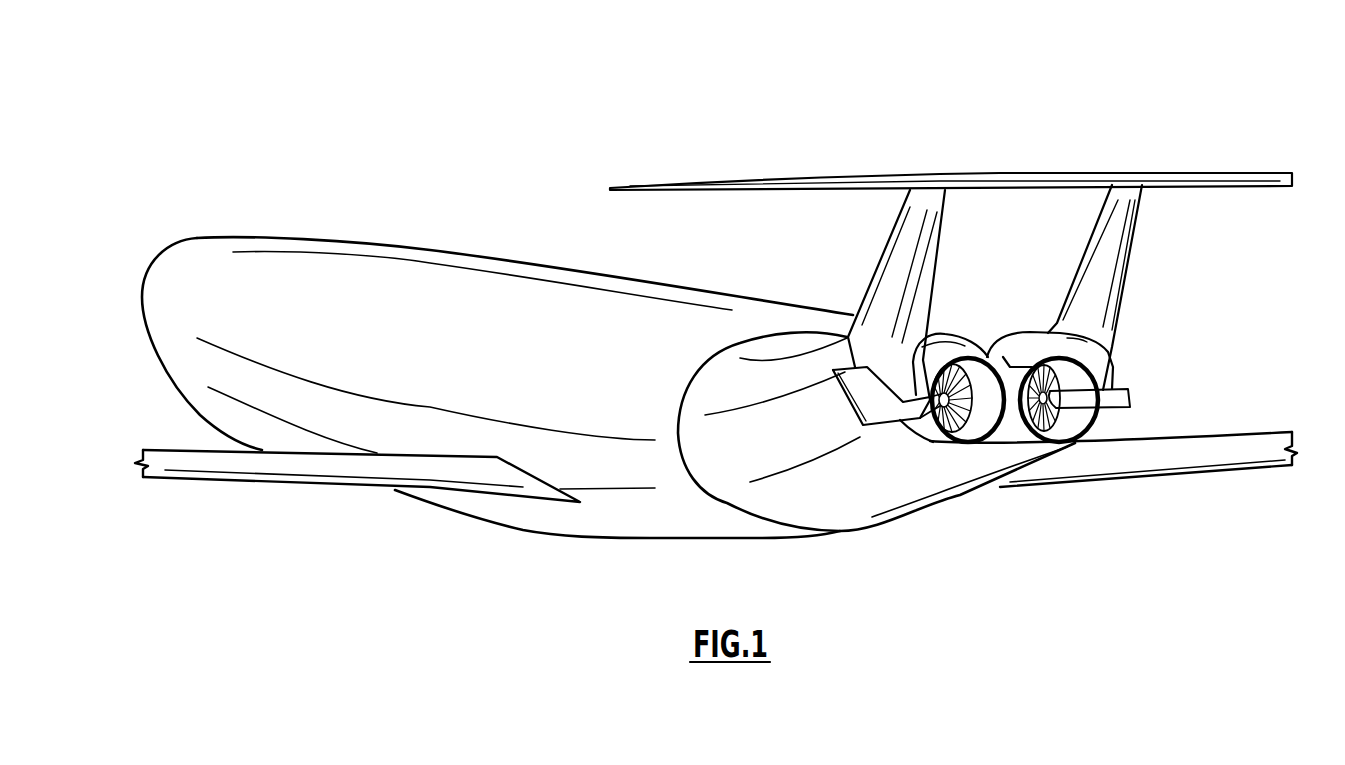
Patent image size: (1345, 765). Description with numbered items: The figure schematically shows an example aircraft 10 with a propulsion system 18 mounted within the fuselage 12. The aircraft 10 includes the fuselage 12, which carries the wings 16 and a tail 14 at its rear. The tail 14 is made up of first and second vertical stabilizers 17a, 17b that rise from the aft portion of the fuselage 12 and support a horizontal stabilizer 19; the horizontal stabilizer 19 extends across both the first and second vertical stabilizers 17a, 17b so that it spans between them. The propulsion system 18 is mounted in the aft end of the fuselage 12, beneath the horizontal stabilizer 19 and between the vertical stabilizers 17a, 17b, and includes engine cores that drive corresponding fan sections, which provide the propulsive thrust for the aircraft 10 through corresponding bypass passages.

The aircraft 10 is at (558, 122).
The fuselage 12 is at (607, 519).
The tail 14 is at (951, 153).
The wings 16 is at (252, 467).
The first vertical stabilizer 17a is at (915, 218).
The second vertical stabilizer 17b is at (1117, 220).
The propulsion system 18 is at (978, 540).
The horizontal stabilizer 19 is at (1207, 178).